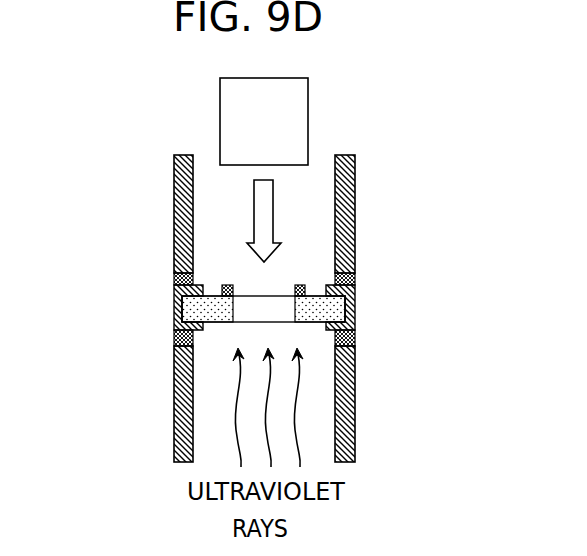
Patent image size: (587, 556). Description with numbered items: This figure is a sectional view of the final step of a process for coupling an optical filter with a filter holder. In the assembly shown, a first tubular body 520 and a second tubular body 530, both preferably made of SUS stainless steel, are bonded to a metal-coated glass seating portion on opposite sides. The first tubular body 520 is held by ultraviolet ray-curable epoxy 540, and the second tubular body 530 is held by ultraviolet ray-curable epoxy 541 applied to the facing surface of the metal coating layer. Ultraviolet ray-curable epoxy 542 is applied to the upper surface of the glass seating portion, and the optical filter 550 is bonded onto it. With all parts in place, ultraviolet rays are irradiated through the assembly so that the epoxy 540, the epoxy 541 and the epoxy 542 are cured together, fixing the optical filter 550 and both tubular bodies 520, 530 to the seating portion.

The optical filter 550 is at (290, 107).
The second tubular body 530 is at (174, 175).
The ultraviolet ray-curable epoxy 541 is at (174, 279).
The ultraviolet ray-curable epoxy 540 is at (174, 337).
The ultraviolet ray-curable epoxy 542 is at (300, 285).
The first tubular body 520 is at (174, 432).